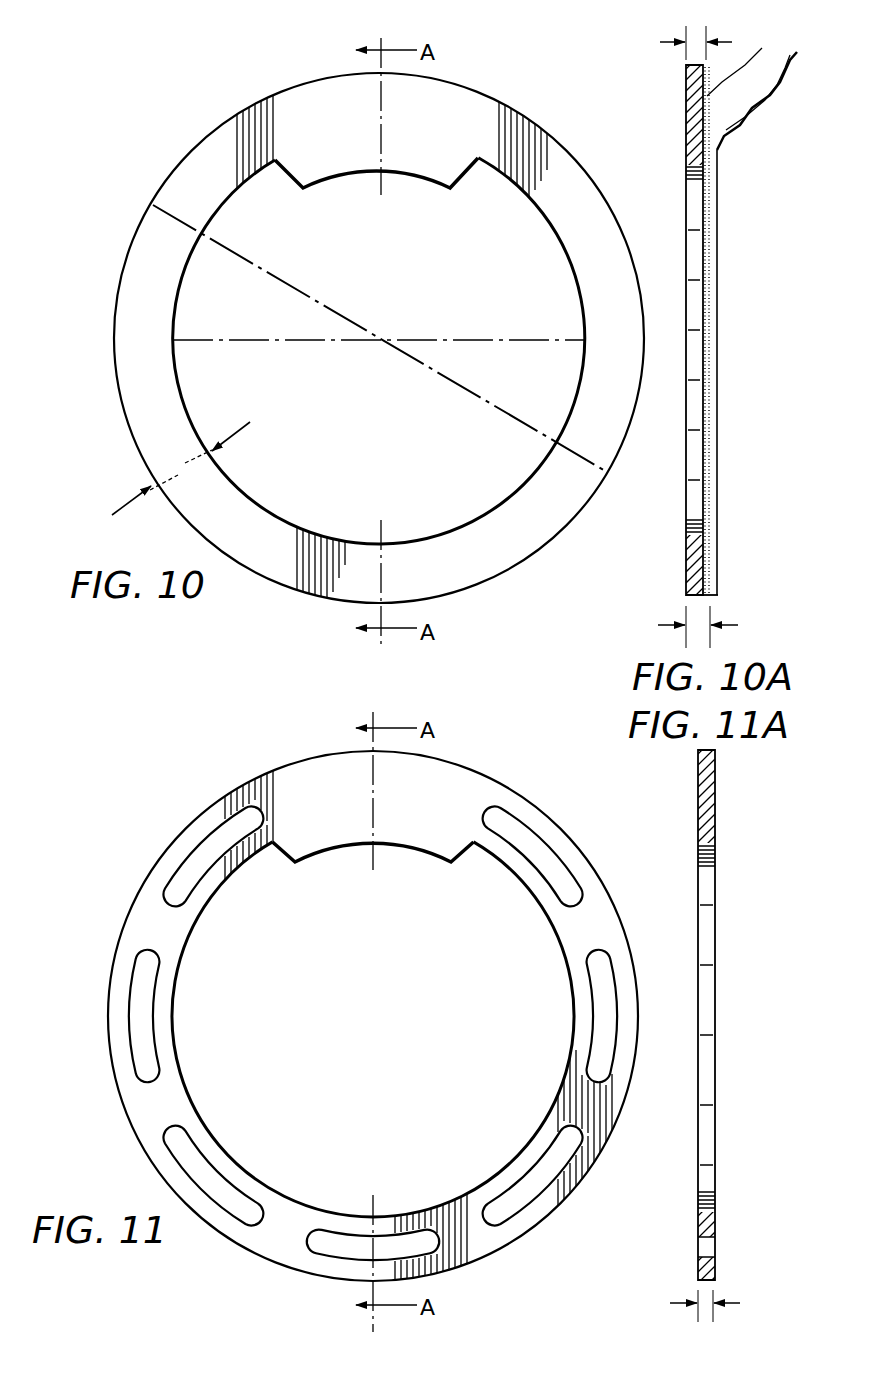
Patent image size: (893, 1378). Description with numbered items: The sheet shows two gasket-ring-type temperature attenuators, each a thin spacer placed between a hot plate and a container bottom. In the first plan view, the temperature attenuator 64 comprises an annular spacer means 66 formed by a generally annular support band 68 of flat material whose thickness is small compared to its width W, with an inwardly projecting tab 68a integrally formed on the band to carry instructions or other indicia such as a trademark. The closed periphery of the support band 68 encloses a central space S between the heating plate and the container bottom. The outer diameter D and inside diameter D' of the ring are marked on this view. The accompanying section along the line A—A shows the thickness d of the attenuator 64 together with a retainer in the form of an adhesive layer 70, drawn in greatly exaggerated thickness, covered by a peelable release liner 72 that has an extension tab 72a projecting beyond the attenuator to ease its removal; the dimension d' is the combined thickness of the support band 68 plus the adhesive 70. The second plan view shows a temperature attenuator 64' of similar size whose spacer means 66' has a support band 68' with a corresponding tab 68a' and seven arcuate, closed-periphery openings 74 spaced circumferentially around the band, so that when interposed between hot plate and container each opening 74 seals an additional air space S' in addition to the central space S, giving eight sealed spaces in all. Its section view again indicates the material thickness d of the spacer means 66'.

In FIG. 10, the temperature attenuator 64 is at (345, 338).
In FIG. 10A, the temperature attenuator 64 is at (738, 328).
In FIG. 10, the spacer means 66 is at (314, 351).
In FIG. 10, the support band 68 is at (422, 345).
In FIG. 10A, the support band 68 is at (731, 469).
In FIG. 10, the inwardly projecting tab 68a is at (380, 196).
In FIG. 10A, the adhesive layer 70 is at (745, 308).
In FIG. 10A, the release liner 72 is at (718, 202).
In FIG. 10A, the extension tab 72a is at (778, 80).
In FIG. 11, the temperature attenuator 64' is at (338, 1016).
In FIG. 11, the spacer means 66' is at (390, 1025).
In FIG. 11A, the spacer means 66' is at (737, 1015).
In FIG. 11, the support band 68' is at (369, 1029).
In FIG. 11, the inwardly projecting tab 68a' is at (373, 875).
In FIG. 11, the arcuate shaped openings 74 is at (200, 850).
In FIG. 11A, the arcuate shaped openings 74 is at (716, 1247).
In FIG. 10, the enclosed space S is at (407, 318).
In FIG. 10A, the enclosed space S is at (725, 363).
In FIG. 11, the enclosed space S is at (371, 1004).
In FIG. 11A, the enclosed space S is at (740, 1017).
In FIG. 11, the sealed air spaces S' is at (324, 1028).
In FIG. 11A, the sealed air spaces S' is at (669, 1248).
In FIG. 10, the outer diameter D is at (380, 338).
In FIG. 10, the inside diameter D' is at (297, 360).
In FIG. 10, the width w is at (188, 466).
In FIG. 10A, the thickness d is at (689, 37).
In FIG. 11A, the thickness d is at (694, 1317).
In FIG. 10A, the combined thickness d' is at (682, 621).